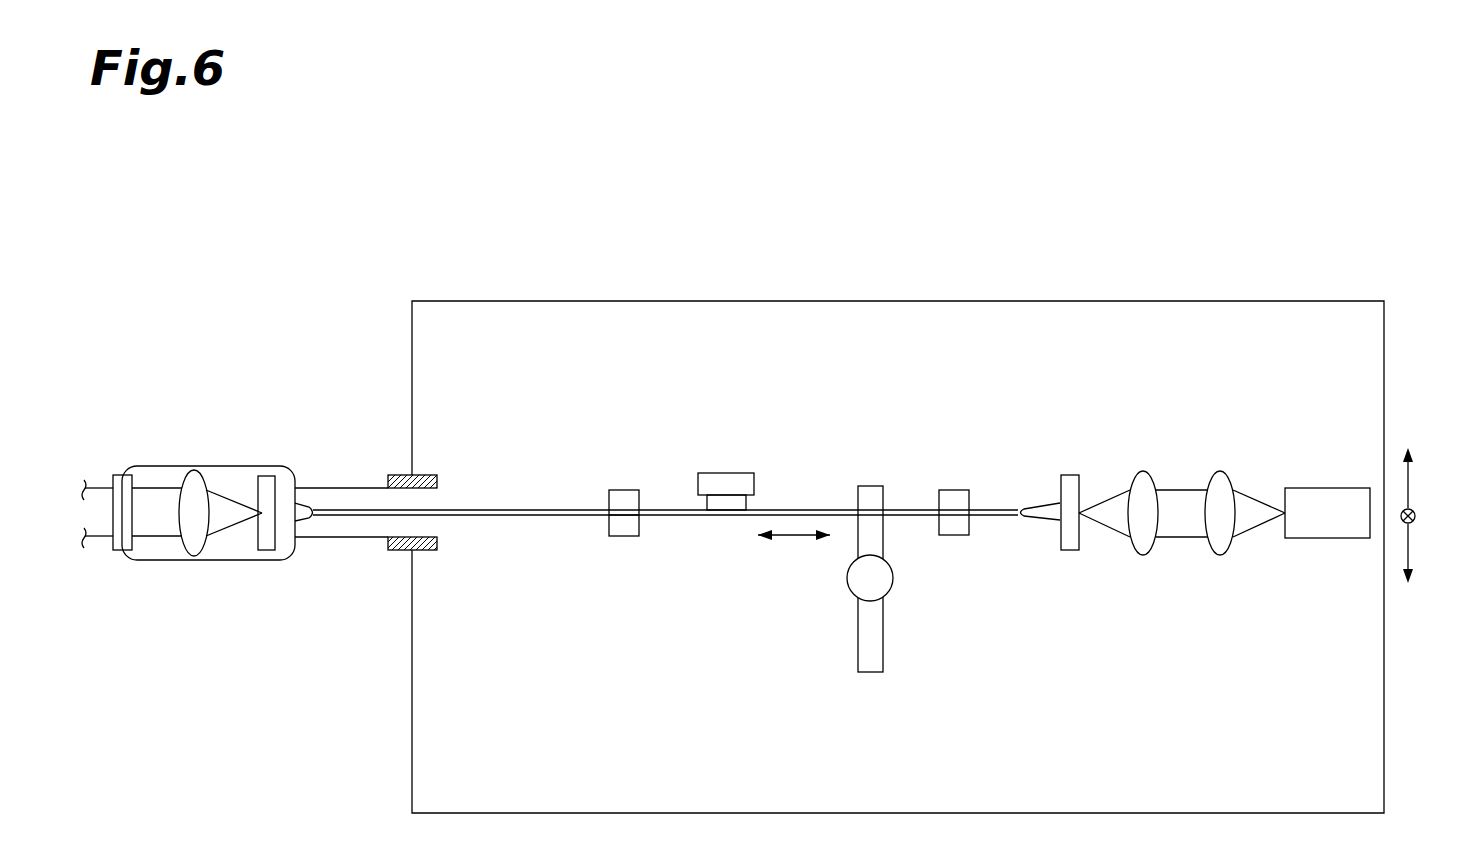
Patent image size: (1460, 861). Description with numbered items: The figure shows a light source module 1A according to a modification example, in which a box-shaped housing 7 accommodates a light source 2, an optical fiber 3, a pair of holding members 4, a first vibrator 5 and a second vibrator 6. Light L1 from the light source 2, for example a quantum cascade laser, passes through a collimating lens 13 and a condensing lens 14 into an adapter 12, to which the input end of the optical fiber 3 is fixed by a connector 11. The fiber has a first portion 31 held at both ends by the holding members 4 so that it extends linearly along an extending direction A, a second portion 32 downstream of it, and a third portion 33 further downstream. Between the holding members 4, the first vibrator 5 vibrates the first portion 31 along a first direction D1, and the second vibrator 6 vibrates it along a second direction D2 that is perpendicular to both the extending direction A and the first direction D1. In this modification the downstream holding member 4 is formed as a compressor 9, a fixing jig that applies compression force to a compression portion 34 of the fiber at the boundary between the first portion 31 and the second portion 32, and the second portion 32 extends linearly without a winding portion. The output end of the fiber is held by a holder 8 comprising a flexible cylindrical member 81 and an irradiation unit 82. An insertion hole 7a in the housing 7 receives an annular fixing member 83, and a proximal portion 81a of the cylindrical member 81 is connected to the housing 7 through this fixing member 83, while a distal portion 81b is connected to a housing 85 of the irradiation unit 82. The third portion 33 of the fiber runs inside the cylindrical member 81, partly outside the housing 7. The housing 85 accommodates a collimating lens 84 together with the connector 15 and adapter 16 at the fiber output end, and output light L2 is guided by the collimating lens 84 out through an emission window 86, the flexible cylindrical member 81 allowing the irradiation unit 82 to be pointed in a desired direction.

The light source module 1A is at (1240, 216).
The housing 7 is at (1012, 301).
The insertion hole 7a is at (413, 472).
The fixing member 83 is at (398, 475).
The holder 8 is at (212, 456).
The irradiation unit 82 is at (158, 466).
The emission window 86 is at (117, 550).
The collimating lens 84 is at (193, 556).
The housing 85 is at (260, 560).
The adapter 16 is at (278, 488).
The connector 15 is at (307, 506).
The output light L2 is at (101, 487).
The cylindrical member 81 is at (344, 521).
The proximal portion 81a is at (382, 539).
The distal portion 81b is at (308, 539).
The optical fiber 3 is at (665, 515).
The first portion 31 is at (810, 510).
The second portion 32 is at (512, 510).
The third portion 33 is at (336, 517).
The compressor 9 is at (622, 490).
The compression portion 34 is at (624, 516).
The second vibrator 6 is at (725, 473).
The extending direction A is at (793, 537).
The first vibrator 5 is at (872, 672).
The holding member 4 is at (955, 535).
The connector 11 is at (1032, 519).
The adapter 12 is at (1072, 550).
The condensing lens 14 is at (1143, 556).
The collimating lens 13 is at (1222, 556).
The light L1 is at (1258, 500).
The light source 2 is at (1330, 538).
The first direction D1 is at (1429, 518).
The second direction D2 is at (1410, 533).